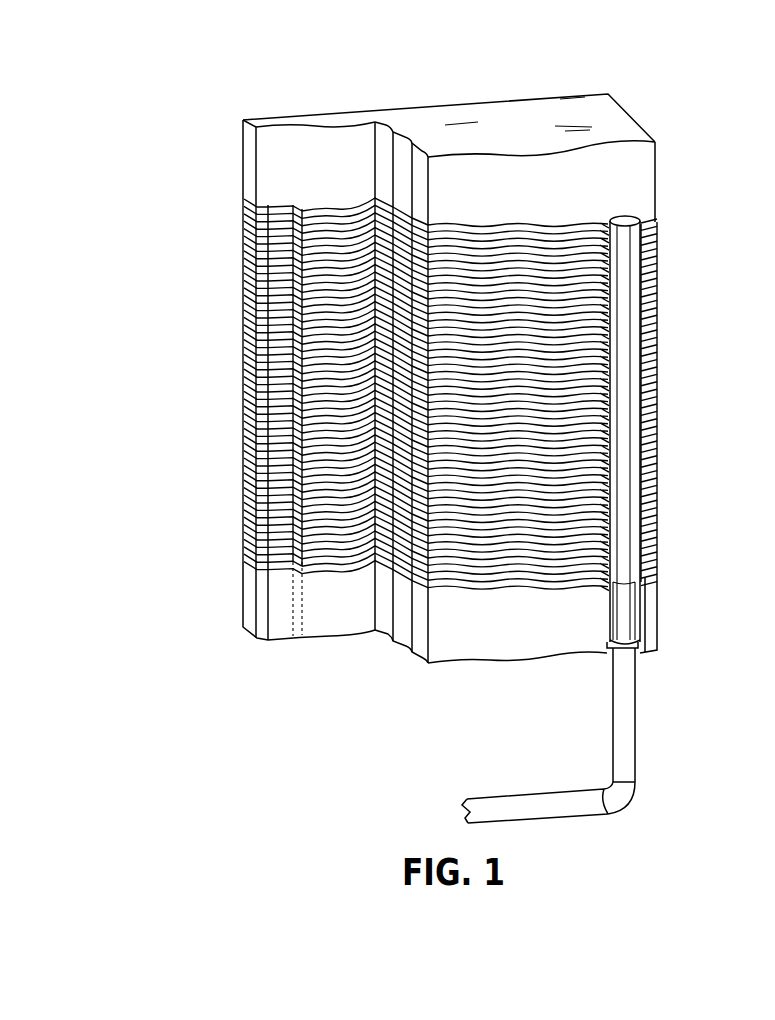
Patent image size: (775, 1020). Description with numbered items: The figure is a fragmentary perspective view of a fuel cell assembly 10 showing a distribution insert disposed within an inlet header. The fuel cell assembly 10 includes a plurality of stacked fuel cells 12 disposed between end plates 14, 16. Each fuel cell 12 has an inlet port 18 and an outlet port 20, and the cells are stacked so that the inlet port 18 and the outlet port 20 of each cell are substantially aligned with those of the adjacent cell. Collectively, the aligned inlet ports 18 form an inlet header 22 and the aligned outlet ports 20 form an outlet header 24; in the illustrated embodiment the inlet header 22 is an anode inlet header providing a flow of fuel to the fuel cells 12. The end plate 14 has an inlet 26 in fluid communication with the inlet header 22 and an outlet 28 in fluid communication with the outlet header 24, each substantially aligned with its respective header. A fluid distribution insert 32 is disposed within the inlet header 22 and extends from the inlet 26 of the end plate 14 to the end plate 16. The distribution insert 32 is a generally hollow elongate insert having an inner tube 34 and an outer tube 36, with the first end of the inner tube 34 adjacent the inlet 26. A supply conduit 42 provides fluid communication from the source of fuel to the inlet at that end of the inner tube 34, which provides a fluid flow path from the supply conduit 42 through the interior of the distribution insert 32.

The fuel cell assembly 10 is at (601, 70).
The fuel cell 12 is at (552, 265).
The end plate 14 is at (252, 608).
The end plate 16 is at (247, 165).
The inlet port 18 is at (652, 325).
The outlet port 20 is at (262, 471).
The inlet header 22 is at (660, 218).
The outlet header 24 is at (245, 207).
The inlet 26 is at (638, 655).
The outlet 28 is at (268, 622).
The fluid distribution insert 32 is at (627, 214).
The inner tube 34 is at (633, 617).
The outer tube 36 is at (622, 583).
The supply conduit 42 is at (627, 760).